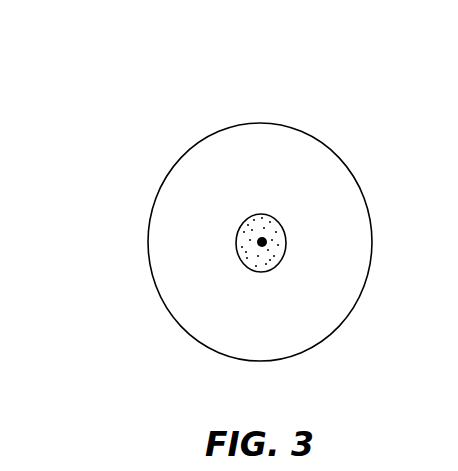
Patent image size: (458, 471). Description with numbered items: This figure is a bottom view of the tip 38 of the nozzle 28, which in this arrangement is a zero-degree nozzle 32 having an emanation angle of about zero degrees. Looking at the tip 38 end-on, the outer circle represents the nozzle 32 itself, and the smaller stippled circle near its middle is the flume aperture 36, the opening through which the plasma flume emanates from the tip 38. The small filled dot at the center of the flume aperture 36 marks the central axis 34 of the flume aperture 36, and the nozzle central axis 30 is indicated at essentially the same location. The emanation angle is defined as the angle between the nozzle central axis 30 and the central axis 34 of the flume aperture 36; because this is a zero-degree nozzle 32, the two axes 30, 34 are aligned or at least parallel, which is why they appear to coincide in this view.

The nozzle 28 is at (355, 78).
The nozzle central axis 30 is at (268, 238).
The 0-degree nozzle 32 is at (355, 130).
The central axis of flume aperture 34 is at (266, 242).
The flume aperture 36 is at (257, 214).
The tip 38 is at (190, 175).